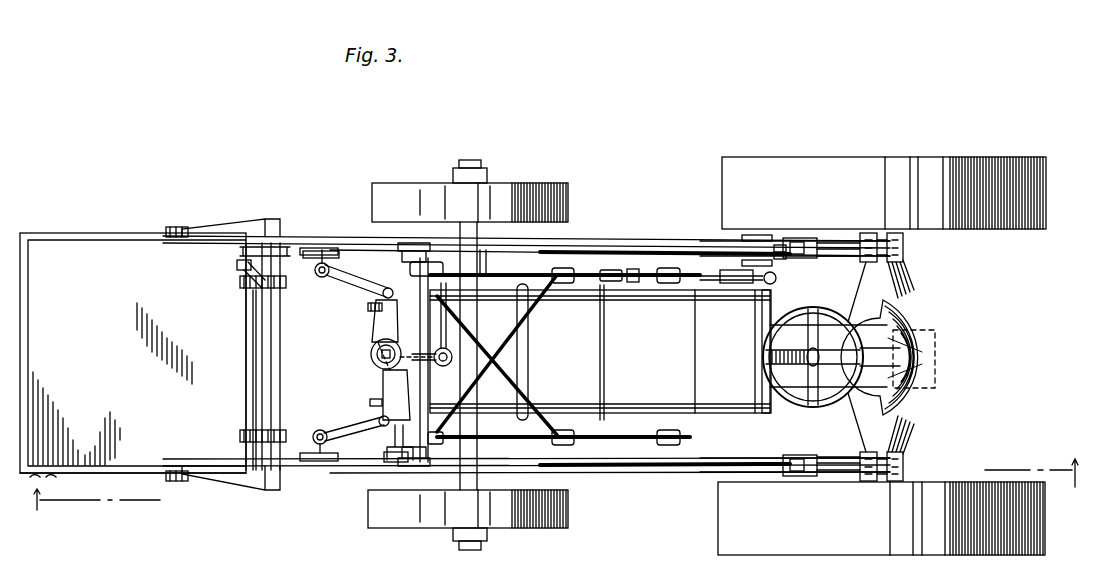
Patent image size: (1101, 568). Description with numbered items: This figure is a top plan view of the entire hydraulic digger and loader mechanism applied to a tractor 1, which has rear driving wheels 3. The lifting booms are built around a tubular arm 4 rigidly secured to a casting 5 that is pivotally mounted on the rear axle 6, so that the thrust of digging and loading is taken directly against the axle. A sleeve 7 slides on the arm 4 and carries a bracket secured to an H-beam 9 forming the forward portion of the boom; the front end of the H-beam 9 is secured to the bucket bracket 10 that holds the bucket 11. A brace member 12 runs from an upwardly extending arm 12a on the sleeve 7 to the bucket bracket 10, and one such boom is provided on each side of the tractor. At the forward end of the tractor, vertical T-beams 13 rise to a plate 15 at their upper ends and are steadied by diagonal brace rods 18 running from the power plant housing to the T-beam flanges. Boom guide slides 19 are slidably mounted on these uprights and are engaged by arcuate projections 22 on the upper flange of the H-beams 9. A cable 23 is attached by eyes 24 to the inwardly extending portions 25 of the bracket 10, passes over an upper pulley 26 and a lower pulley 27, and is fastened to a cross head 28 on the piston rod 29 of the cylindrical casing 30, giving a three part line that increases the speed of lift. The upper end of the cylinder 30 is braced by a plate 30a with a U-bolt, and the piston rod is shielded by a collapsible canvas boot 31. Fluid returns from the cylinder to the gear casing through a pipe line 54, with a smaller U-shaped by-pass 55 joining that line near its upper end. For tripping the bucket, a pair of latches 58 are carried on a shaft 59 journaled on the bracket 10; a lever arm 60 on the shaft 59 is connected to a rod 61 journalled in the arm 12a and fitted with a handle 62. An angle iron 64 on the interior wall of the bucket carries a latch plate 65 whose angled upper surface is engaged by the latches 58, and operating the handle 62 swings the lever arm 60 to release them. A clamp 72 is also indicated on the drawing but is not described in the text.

The tractor 1 is at (553, 486).
The rear driving wheels 3 is at (818, 165).
The tubular arm 4 is at (645, 250).
The casting 5 is at (845, 243).
The rear axle 6 is at (903, 235).
The sleeve 7 is at (812, 240).
The H-beam 9 is at (432, 244).
The bucket bracket 10 is at (210, 232).
The bucket 11 is at (70, 236).
The brace member 12 is at (700, 250).
The upwardly extending arm 12a is at (775, 244).
The vertical T-beams 13 is at (404, 466).
The plate 15 is at (424, 392).
The diagonal brace rods 18 is at (618, 436).
The boom guide slides 19 is at (408, 246).
The arcuate projections 22 is at (388, 456).
The cable 23 is at (350, 290).
The eyes 24 is at (380, 420).
The inwardly extending portions 25 is at (305, 452).
The upper pulley 26 is at (380, 294).
The lower pulley 27 is at (368, 306).
The cross head 28 is at (384, 390).
The piston rod 29 is at (372, 362).
The cylindrical casing 30 is at (376, 347).
The plate 30a is at (460, 318).
The collapsible canvas boot 31 is at (735, 270).
The pipe line 54 is at (690, 288).
The by-pass 55 is at (443, 364).
The latches 58 is at (252, 283).
The shaft 59 is at (262, 332).
The lever arm 60 is at (238, 265).
The rod 61 is at (305, 242).
The handle 62 is at (800, 257).
The angle iron 64 is at (270, 366).
The latch plate 65 is at (262, 416).
The rail clamp 72 is at (178, 226).